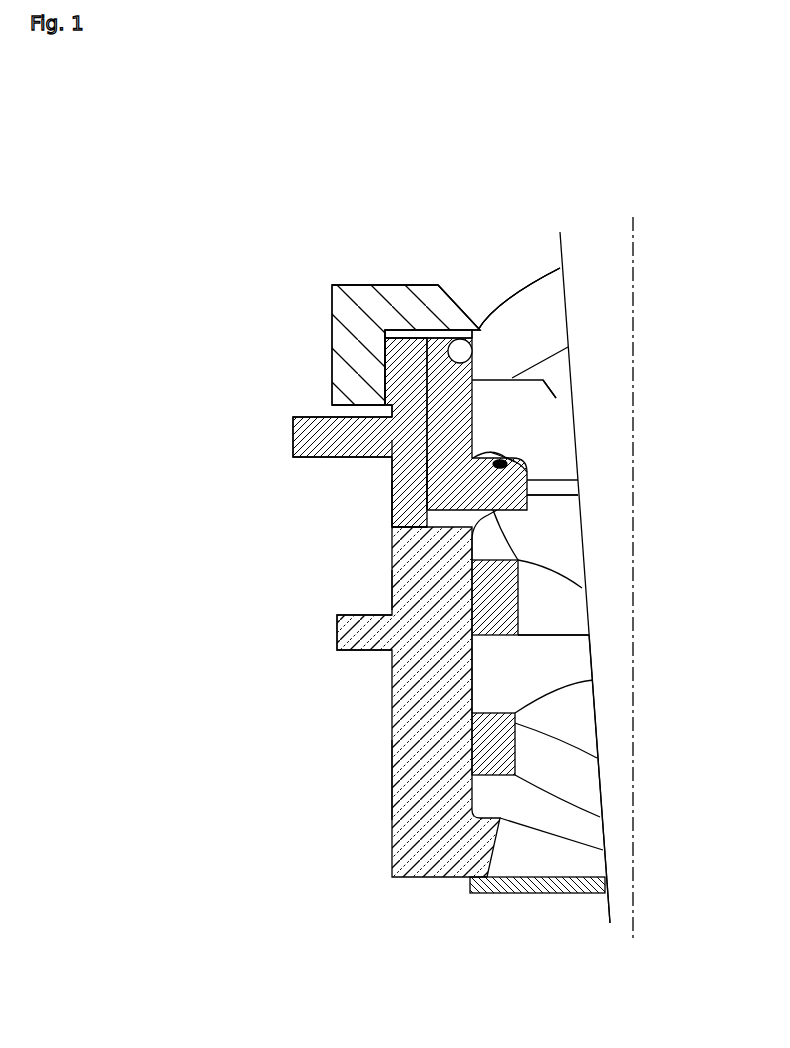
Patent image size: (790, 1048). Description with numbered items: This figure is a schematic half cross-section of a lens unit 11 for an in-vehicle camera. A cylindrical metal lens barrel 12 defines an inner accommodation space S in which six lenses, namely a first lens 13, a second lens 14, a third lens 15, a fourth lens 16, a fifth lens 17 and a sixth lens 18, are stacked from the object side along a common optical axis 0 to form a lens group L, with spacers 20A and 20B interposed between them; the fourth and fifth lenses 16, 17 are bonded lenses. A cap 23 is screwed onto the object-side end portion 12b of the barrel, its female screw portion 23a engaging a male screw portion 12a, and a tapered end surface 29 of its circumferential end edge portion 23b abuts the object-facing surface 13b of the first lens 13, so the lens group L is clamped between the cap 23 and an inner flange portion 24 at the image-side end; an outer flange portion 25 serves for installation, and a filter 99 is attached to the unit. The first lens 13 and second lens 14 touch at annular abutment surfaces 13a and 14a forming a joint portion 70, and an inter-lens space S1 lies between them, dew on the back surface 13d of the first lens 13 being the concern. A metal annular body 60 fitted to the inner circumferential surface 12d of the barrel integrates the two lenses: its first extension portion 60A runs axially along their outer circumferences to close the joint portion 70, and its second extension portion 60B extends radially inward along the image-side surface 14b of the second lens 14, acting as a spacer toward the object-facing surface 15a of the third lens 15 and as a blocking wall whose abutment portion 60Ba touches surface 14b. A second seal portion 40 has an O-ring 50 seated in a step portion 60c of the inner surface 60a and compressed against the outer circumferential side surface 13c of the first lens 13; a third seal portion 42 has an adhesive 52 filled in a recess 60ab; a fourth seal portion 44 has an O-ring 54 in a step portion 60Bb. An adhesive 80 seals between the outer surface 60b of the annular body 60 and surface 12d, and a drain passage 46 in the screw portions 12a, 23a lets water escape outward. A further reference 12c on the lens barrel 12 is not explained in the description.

The lens unit 11 is at (442, 230).
The lens barrel 12 is at (392, 728).
The male screw portion 12a is at (388, 390).
The object-side end portion 12b is at (388, 383).
The third surface of first member 12c is at (425, 478).
The inner circumferential surface 12d is at (392, 447).
The first lens 13 is at (519, 302).
The abutment surface of first lens 13a is at (400, 455).
The object-side surface of first lens 13b is at (523, 297).
The outer circumferential side surface of first lens 13c is at (390, 294).
The back surface of first lens 13d is at (553, 350).
The second lens 14 is at (575, 478).
The abutment surface of second lens 14a is at (546, 388).
The image-side surface of second lens 14b is at (392, 590).
The third lens 15 is at (567, 552).
The object-side surface of third lens 15a is at (519, 600).
The fourth lens 16 is at (573, 662).
The fifth lens 17 is at (577, 732).
The sixth lens 18 is at (580, 832).
The spacer 20A is at (487, 603).
The spacer 20B is at (392, 777).
The cap 23 is at (388, 386).
The female screw portion 23a is at (390, 405).
The circumferential end edge portion 23b is at (455, 326).
The inner flange portion 24 is at (493, 860).
The outer flange portion 25 is at (543, 637).
The tapered end surface 29 is at (482, 332).
The second seal portion 40 is at (483, 347).
The third seal portion 42 is at (488, 452).
The fourth seal portion 44 is at (507, 462).
The drain passage 46 is at (390, 372).
The O-ring 50 is at (472, 355).
The adhesive 52 is at (497, 455).
The O-ring 54 is at (577, 495).
The annular body 60 is at (408, 472).
The first extension portion 60A is at (293, 440).
The second extension portion 60B is at (487, 574).
The inner surface of annular body 60a is at (393, 460).
The outer surface of annular body 60b is at (410, 495).
The recess 60ab is at (420, 510).
The step portion 60c is at (392, 340).
The abutment portion 60Ba is at (574, 480).
The step portion 60Bb is at (513, 512).
The joint portion 70 is at (396, 352).
The adhesive 80 is at (388, 346).
The filter 99 is at (553, 890).
The optical axis 0 is at (636, 338).
The lens group L is at (538, 290).
The inner accommodation space S is at (470, 648).
The inter-lens space S1 is at (521, 384).